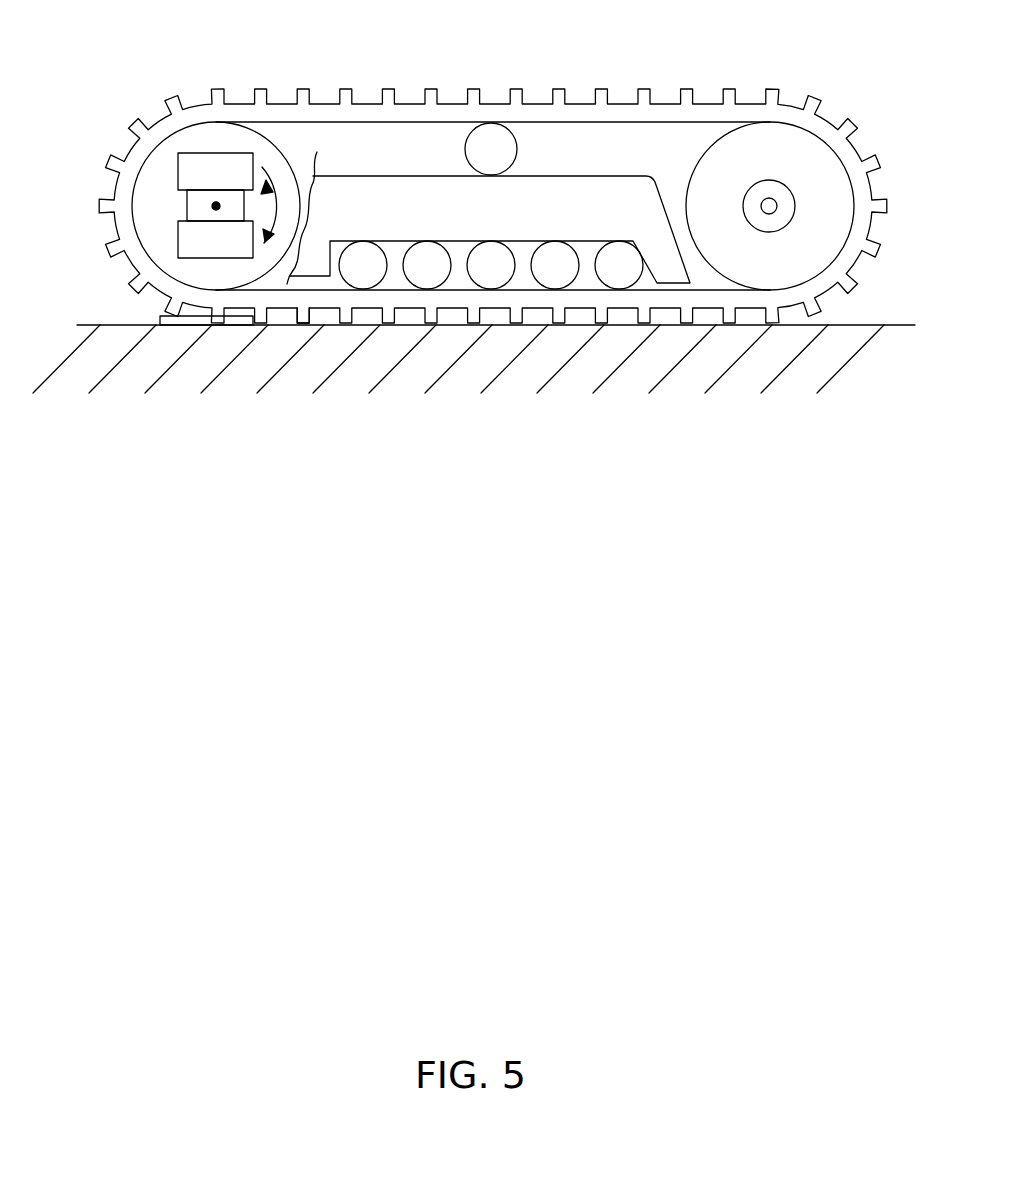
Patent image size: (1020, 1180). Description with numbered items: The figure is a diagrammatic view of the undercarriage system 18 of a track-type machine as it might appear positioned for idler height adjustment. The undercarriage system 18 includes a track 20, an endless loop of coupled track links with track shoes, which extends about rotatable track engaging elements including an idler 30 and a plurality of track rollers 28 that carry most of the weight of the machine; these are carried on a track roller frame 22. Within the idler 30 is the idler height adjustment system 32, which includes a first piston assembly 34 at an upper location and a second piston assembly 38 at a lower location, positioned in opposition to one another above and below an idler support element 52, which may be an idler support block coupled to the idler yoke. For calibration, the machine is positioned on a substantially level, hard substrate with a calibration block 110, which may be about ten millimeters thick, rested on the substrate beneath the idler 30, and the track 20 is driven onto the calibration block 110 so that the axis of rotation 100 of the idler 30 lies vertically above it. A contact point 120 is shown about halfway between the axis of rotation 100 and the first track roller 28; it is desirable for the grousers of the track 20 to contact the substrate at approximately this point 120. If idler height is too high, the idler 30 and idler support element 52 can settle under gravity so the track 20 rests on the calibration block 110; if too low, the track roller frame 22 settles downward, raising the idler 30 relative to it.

The undercarriage system 18 is at (851, 94).
The track 20 is at (636, 298).
The track roller frame 22 is at (537, 196).
The track roller 28 is at (377, 275).
The idler 30 is at (142, 223).
The idler height adjustment system 32 is at (222, 144).
The first piston assembly 34 is at (195, 152).
The second piston assembly 38 is at (195, 250).
The idler support element 52 is at (195, 194).
The axis of rotation 100 is at (209, 208).
The calibration block 110 is at (212, 324).
The contact point 120 is at (298, 326).